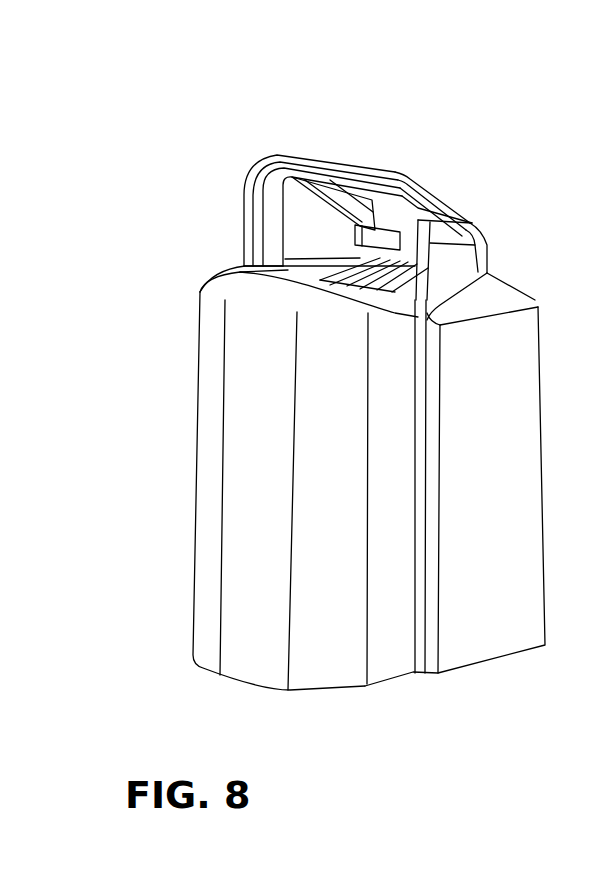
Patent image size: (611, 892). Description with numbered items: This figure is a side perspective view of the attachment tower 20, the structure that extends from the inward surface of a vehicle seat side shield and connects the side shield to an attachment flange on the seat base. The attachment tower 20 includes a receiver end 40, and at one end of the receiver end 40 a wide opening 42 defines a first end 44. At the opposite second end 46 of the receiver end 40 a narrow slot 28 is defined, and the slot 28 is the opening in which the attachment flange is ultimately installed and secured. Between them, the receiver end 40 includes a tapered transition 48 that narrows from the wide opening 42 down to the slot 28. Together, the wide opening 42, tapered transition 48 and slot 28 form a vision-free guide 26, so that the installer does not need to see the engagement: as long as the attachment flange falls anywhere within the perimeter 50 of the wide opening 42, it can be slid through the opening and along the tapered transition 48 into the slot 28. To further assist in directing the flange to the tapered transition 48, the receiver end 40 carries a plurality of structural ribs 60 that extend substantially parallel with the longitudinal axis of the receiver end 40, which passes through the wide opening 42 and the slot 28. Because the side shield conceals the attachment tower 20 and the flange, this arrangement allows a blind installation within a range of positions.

The attachment tower 20 is at (182, 553).
The guide 26 is at (405, 167).
The slot 28 is at (422, 318).
The receiver end 40 is at (465, 207).
The wide opening 42 is at (328, 236).
The first end 44 is at (235, 220).
The second end 46 is at (490, 257).
The tapered transition 48 is at (297, 265).
The perimeter 50 is at (260, 243).
The structural ribs 60 is at (437, 290).